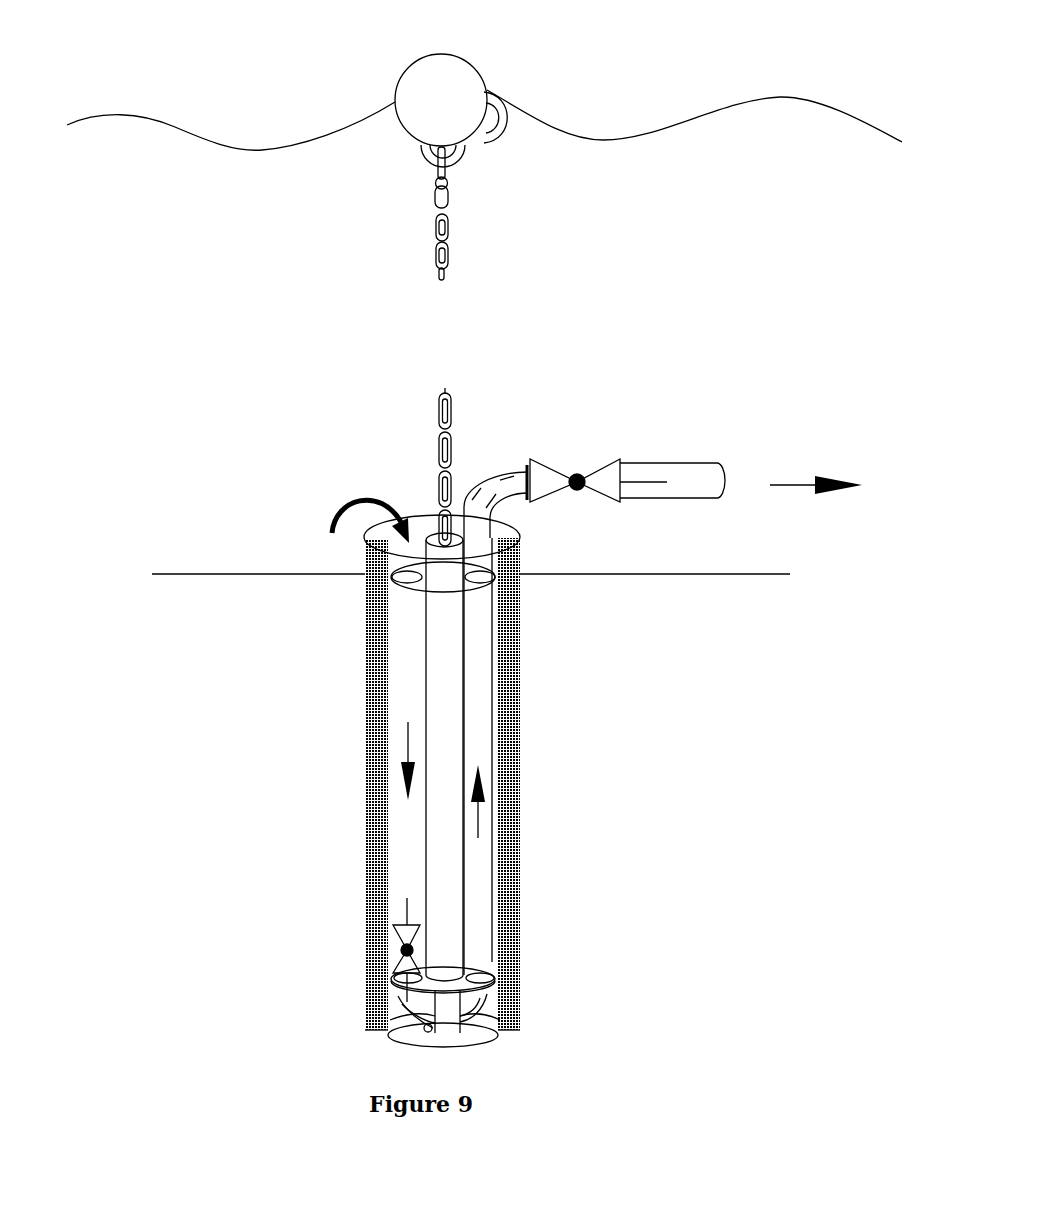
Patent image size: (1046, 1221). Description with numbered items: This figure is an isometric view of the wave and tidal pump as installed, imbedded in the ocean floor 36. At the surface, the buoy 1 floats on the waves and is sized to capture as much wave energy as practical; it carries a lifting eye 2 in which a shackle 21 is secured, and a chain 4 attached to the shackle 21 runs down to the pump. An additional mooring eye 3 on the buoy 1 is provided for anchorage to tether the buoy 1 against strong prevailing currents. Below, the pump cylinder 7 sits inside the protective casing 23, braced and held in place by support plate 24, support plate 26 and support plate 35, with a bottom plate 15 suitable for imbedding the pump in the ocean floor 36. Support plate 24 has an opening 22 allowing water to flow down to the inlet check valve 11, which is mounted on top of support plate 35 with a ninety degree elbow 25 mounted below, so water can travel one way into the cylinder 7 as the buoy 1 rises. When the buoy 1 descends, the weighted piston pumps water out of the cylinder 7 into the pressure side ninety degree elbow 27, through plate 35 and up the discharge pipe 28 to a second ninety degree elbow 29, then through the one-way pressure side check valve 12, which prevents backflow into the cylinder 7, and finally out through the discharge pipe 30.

The buoy 1 is at (395, 98).
The lifting eye 2 is at (422, 150).
The mooring eye 3 is at (493, 133).
The chain 4 is at (437, 228).
The pump cylinder 7 is at (425, 538).
The inlet check valve 11 is at (395, 942).
The check valve 12 is at (552, 470).
The bottom plate 15 is at (428, 1028).
The shackle 21 is at (450, 172).
The opening 22 is at (363, 567).
The protective casing 23 is at (363, 632).
The support plate 24 is at (415, 593).
The 90 degree elbow 25 is at (372, 1008).
The support plate 26 is at (402, 1037).
The pressure side 90 degree elbow 27 is at (480, 1020).
The discharge pipe 28 is at (498, 754).
The second 90 degree elbow 29 is at (503, 470).
The discharge pipe 30 is at (678, 463).
The support plate 35 is at (460, 990).
The ocean floor 36 is at (243, 575).